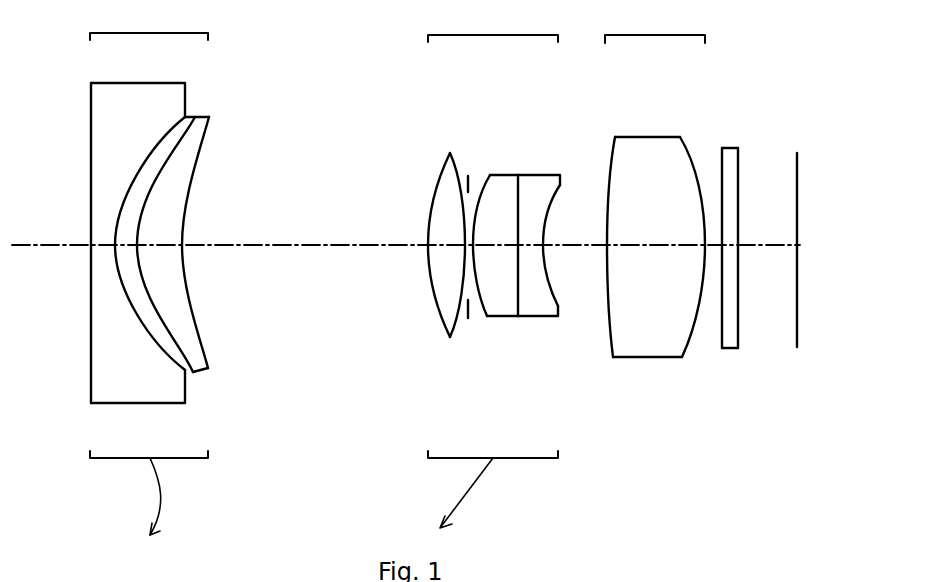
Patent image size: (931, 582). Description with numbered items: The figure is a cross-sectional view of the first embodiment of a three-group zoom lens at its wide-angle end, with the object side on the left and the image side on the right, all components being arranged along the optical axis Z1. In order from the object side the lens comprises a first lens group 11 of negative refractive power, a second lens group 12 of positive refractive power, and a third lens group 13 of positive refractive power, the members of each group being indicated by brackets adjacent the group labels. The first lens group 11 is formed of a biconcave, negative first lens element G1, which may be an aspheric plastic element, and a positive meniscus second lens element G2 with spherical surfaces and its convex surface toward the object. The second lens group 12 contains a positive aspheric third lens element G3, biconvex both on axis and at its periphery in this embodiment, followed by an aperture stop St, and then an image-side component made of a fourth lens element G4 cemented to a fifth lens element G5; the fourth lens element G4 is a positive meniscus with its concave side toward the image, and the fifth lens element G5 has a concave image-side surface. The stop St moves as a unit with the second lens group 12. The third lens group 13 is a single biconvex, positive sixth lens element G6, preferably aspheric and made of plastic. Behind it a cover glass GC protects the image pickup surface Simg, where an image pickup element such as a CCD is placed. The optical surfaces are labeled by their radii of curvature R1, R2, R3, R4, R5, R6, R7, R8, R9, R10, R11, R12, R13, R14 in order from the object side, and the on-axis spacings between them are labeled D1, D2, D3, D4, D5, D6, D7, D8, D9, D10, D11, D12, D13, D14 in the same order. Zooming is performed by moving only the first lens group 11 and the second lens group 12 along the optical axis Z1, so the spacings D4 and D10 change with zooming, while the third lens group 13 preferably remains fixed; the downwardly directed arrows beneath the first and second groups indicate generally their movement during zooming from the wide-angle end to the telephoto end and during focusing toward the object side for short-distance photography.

The first lens group 11 is at (147, 269).
The second lens group 12 is at (501, 265).
The third lens group 13 is at (648, 201).
The first lens element G1 is at (127, 240).
The second lens element G2 is at (191, 256).
The third lens element G3 is at (437, 257).
The fourth lens element G4 is at (500, 267).
The fifth lens element G5 is at (544, 246).
The sixth lens element G6 is at (648, 244).
The aperture stop St is at (466, 168).
The cover glass GC is at (732, 270).
The image pickup surface Simg is at (797, 153).
The optical axis Z1 is at (38, 247).
The on-axis surface spacing D1 is at (101, 245).
The on-axis surface spacing D2 is at (128, 234).
The on-axis surface spacing D3 is at (160, 233).
The on-axis surface spacing D4 is at (300, 233).
The on-axis surface spacing D5 is at (445, 235).
The on-axis surface spacing D6 is at (460, 218).
The on-axis surface spacing D7 is at (471, 243).
The on-axis surface spacing D8 is at (494, 235).
The on-axis surface spacing D9 is at (528, 243).
The on-axis surface spacing D10 is at (573, 235).
The on-axis surface spacing D11 is at (652, 235).
The on-axis surface spacing D12 is at (713, 243).
The on-axis surface spacing D13 is at (738, 248).
The on-axis surface spacing D14 is at (766, 235).
The radius of curvature R1 is at (90, 384).
The radius of curvature R2 is at (133, 313).
The radius of curvature R3 is at (178, 355).
The radius of curvature R4 is at (203, 342).
The radius of curvature R5 is at (434, 312).
The radius of curvature R6 is at (463, 320).
The radius of curvature R7 is at (468, 318).
The radius of curvature R8 is at (483, 303).
The radius of curvature R9 is at (517, 318).
The radius of curvature R10 is at (556, 316).
The radius of curvature R11 is at (612, 357).
The radius of curvature R12 is at (686, 357).
The radius of curvature R13 is at (721, 343).
The radius of curvature R14 is at (738, 346).